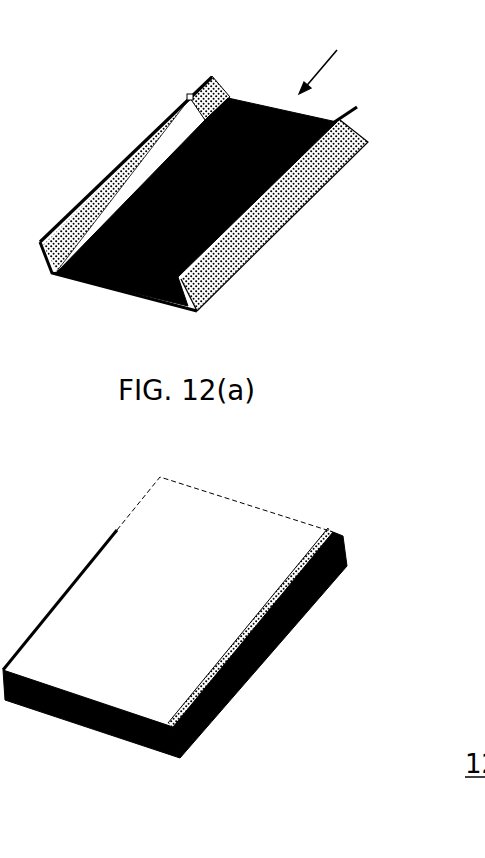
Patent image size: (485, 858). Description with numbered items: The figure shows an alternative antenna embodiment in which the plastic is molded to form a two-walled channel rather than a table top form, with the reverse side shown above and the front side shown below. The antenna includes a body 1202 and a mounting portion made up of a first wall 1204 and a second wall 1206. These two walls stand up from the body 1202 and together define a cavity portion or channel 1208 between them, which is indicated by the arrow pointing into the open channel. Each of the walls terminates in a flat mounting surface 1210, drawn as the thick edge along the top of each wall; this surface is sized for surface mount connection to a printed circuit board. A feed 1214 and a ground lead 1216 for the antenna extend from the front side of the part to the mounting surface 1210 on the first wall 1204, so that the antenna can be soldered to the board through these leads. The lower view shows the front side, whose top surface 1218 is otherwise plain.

The body 1202 is at (117, 272).
The first wall 1204 is at (145, 147).
The second wall 1206 is at (282, 223).
The channel 1208 is at (349, 65).
The flat mounting surface 1210 is at (167, 120).
The feed 1214 is at (212, 73).
The ground lead 1216 is at (190, 95).
The top surface 1218 is at (110, 570).